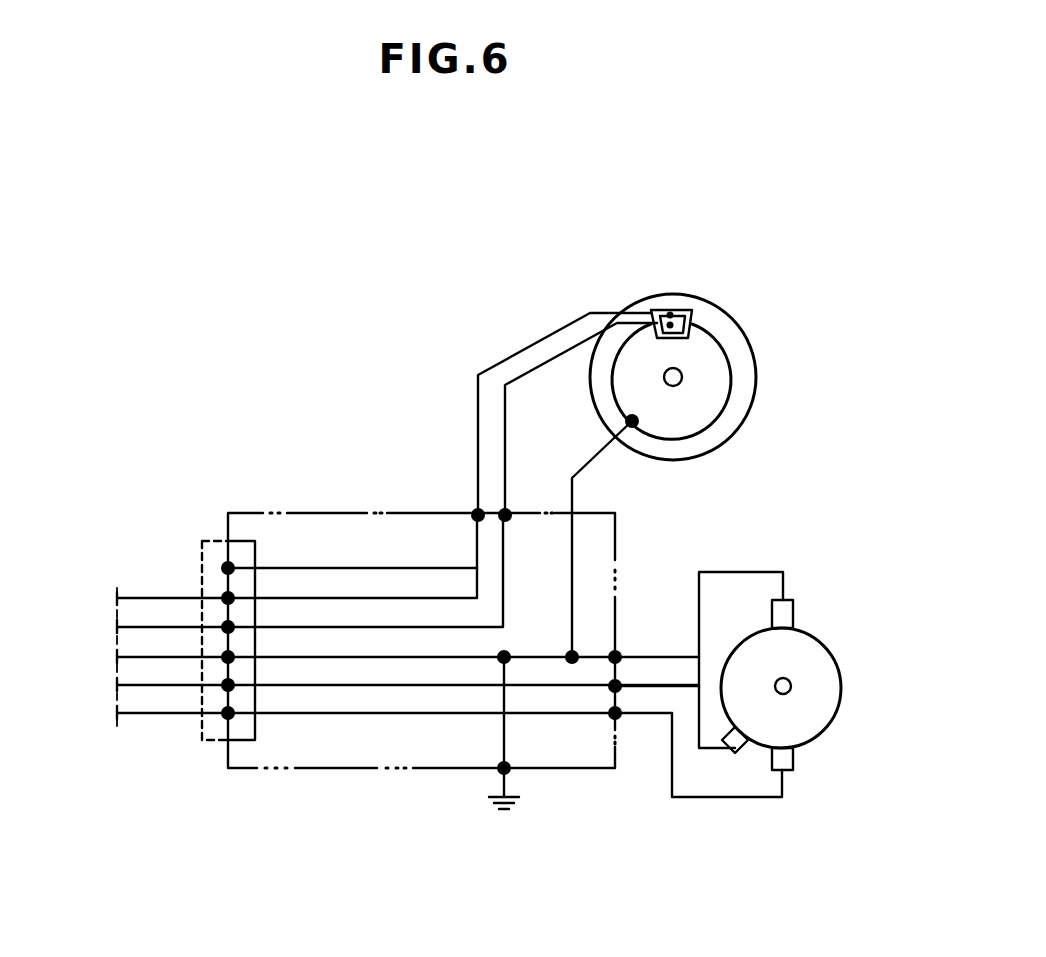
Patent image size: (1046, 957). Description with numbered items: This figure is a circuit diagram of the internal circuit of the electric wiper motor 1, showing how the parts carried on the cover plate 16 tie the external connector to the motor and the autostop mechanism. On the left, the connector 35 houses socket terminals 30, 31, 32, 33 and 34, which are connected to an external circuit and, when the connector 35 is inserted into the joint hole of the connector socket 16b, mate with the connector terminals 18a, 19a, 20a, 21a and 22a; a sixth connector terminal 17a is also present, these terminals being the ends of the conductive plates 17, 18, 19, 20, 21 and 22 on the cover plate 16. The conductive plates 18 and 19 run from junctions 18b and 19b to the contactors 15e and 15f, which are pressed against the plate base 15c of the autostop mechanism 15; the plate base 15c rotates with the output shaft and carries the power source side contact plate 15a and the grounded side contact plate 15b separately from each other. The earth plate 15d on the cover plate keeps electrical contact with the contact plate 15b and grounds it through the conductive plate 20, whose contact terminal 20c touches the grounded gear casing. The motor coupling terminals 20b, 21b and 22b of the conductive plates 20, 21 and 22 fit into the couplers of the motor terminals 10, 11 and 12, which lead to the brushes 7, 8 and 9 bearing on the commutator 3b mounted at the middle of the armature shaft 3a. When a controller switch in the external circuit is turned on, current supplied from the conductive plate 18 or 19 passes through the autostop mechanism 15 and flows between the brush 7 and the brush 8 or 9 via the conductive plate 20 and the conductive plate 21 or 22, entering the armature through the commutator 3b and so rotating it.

The electric wiper motor 1 is at (362, 352).
The armature shaft 3a is at (791, 687).
The commutator 3b is at (828, 652).
The brush 7 is at (792, 602).
The brush 8 is at (740, 762).
The brush 9 is at (793, 760).
The motor terminal 10 is at (740, 572).
The motor terminal 11 is at (702, 750).
The motor terminal 12 is at (775, 798).
The autostop mechanism 15 is at (728, 329).
The power source side contact plate 15a is at (691, 318).
The grounded side contact plate 15b is at (732, 383).
The plate base 15c is at (747, 337).
The earth plate 15d is at (602, 452).
The contactor 15e is at (593, 313).
The contactor 15f is at (555, 352).
The cover plate 16 is at (297, 770).
The connector socket 16b is at (245, 740).
The conductive plate 17 is at (357, 568).
The connector terminal 17a is at (228, 568).
The conductive plate 18 is at (322, 598).
The connector terminal 18a is at (228, 598).
The junction of conductive plate 18 18b is at (478, 515).
The conductive plate 19 is at (390, 627).
The connector terminal 19a is at (228, 627).
The junction of conductive plate 19 19b is at (505, 515).
The conductive plate 20 is at (418, 657).
The connector terminal 20a is at (228, 657).
The motor coupling terminal 20b is at (615, 657).
The contact terminal 20c is at (500, 777).
The conductive plate 21 is at (447, 685).
The connector terminal 21a is at (228, 685).
The motor coupling terminal 21b is at (615, 686).
The conductive plate 22 is at (466, 713).
The connector terminal 22a is at (228, 713).
The motor coupling terminal 22b is at (615, 713).
The socket terminal 30 is at (133, 598).
The socket terminal 31 is at (120, 627).
The socket terminal 32 is at (120, 657).
The socket terminal 33 is at (120, 685).
The socket terminal 34 is at (120, 713).
The connector 35 is at (240, 541).